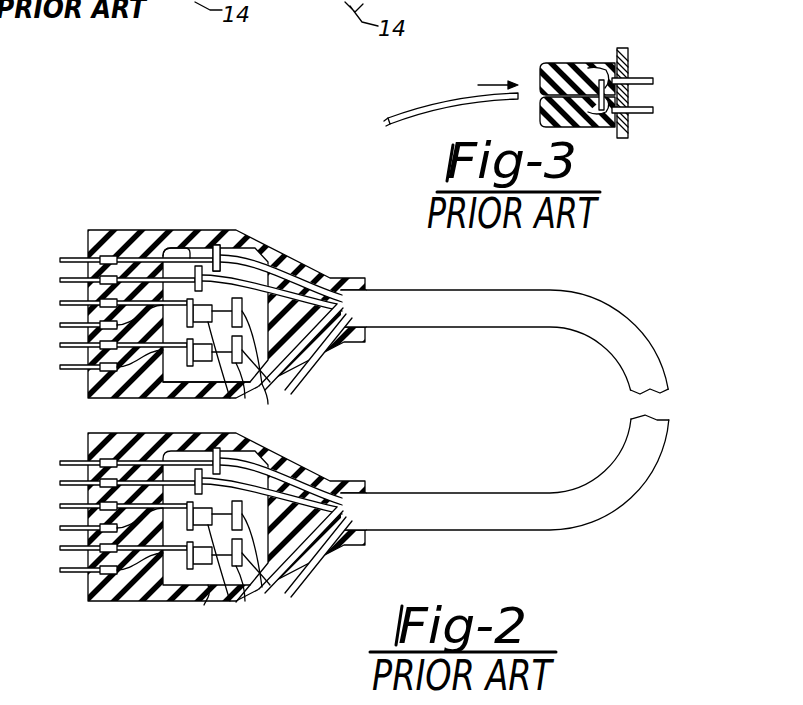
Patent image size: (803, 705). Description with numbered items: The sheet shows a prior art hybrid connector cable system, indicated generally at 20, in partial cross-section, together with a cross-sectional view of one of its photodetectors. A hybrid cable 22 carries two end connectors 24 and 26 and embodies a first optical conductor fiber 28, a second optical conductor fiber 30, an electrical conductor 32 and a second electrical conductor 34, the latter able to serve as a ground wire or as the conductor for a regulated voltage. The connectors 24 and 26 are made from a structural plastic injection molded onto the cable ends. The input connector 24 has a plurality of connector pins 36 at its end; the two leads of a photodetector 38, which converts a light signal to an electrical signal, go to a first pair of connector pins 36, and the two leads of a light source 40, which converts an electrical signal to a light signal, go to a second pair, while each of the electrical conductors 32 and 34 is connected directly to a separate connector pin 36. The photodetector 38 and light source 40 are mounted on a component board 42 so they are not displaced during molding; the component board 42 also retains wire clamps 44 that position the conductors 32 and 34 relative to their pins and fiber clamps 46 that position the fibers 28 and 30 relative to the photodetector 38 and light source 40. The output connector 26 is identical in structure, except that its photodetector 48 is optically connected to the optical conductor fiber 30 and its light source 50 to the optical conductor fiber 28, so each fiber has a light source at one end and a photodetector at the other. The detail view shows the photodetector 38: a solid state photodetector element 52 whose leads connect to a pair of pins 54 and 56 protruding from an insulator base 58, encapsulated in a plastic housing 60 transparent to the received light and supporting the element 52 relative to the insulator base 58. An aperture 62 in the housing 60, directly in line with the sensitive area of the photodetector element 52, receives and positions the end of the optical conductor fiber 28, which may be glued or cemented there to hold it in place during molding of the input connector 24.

In FIG. 2, the cable assembly 20 is at (634, 300).
In FIG. 2, the hybrid cable 22 is at (445, 290).
In FIG. 2, the input connector 24 is at (330, 277).
In FIG. 2, the output connector 26 is at (333, 482).
In FIG. 2, the optical conductor fiber 28 is at (306, 345).
In FIG. 3, the optical conductor fiber 28 is at (450, 98).
In FIG. 2, the second optical conductor fiber 30 is at (300, 360).
In FIG. 2, the electrical conductor 32 is at (262, 262).
In FIG. 2, the second electrical conductor 34 is at (238, 245).
In FIG. 2, the connector pins 36 is at (70, 258).
In FIG. 2, the photodetector 38 is at (176, 384).
In FIG. 3, the photodetector 38 is at (535, 61).
In FIG. 2, the light source 40 is at (227, 386).
In FIG. 2, the component board 42 is at (173, 247).
In FIG. 2, the wire clamps 44 is at (193, 252).
In FIG. 2, the fiber clamps 46 is at (244, 382).
In FIG. 2, the photodetector 48 is at (226, 600).
In FIG. 2, the light source 50 is at (203, 590).
In FIG. 3, the photodetector element 52 is at (600, 112).
In FIG. 3, the pin 54 is at (644, 78).
In FIG. 3, the pin 56 is at (645, 113).
In FIG. 3, the insulator base 58 is at (625, 48).
In FIG. 3, the plastic housing 60 is at (600, 65).
In FIG. 3, the aperture 62 is at (540, 102).